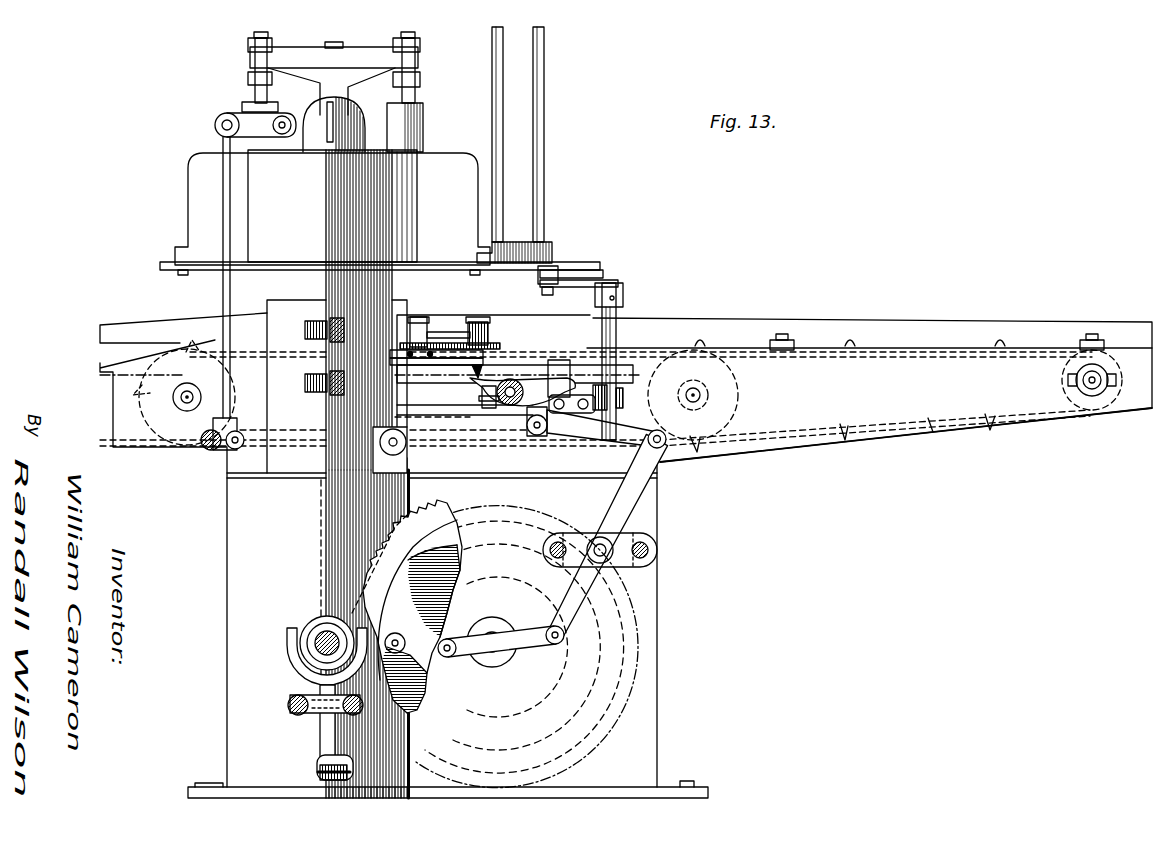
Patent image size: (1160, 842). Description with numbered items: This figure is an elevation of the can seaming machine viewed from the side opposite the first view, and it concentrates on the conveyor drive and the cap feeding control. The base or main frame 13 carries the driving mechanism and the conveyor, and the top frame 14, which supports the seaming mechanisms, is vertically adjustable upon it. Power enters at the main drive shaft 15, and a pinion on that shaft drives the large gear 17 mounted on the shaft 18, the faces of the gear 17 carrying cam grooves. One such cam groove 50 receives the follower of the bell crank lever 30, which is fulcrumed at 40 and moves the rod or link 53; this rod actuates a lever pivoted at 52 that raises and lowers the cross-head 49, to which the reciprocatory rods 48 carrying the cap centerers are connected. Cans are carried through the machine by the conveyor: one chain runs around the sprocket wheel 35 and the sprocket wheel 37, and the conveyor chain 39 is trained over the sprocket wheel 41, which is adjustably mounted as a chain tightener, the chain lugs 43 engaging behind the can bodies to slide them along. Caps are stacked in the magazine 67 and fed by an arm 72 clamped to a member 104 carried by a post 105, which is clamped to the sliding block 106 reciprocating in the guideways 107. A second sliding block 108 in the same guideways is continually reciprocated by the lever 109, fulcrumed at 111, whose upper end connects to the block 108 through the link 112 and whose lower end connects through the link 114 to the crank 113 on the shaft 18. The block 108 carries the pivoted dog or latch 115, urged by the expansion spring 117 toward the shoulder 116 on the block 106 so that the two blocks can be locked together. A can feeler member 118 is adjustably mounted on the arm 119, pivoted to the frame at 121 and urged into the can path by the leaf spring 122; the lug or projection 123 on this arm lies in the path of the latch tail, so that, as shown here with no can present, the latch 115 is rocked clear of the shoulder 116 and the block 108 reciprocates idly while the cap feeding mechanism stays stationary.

The base or main frame 13 is at (660, 589).
The top frame 14 is at (188, 186).
The main drive shaft 15 is at (325, 632).
The large gear 17 is at (440, 503).
The shaft 18 is at (490, 633).
The bell crank lever 30 is at (390, 527).
The sprocket wheel 35 is at (153, 407).
The sprocket wheel 37 is at (728, 385).
The conveyor chain 39 is at (932, 424).
The fulcrum 40 is at (357, 447).
The sprocket wheel 41 is at (1095, 405).
The lugs or fingers 43 is at (623, 347).
The reciprocatory rod 48 is at (255, 83).
The cross-head 49 is at (334, 78).
The cam groove 50 is at (427, 677).
The pivot 52 is at (287, 116).
The rod or link 53 is at (222, 142).
The magazine 67 is at (552, 243).
The arm 72 is at (600, 273).
The member 104 is at (577, 289).
The post 105 is at (628, 303).
The sliding block 106 is at (580, 392).
The guideways 107 is at (435, 416).
The sliding block 108 is at (474, 400).
The lever 109 is at (637, 488).
The fulcrum 111 is at (600, 540).
The link 112 is at (582, 430).
The crank 113 is at (458, 637).
The link 114 is at (530, 645).
The pivoted dog or latch 115 is at (522, 378).
The shoulder 116 is at (560, 427).
The expansion spring 117 is at (522, 406).
The feeler member 118 is at (492, 342).
The arm 119 is at (438, 330).
The pivot 121 is at (418, 314).
The leaf spring 122 is at (434, 372).
The lug or projection 123 is at (474, 378).